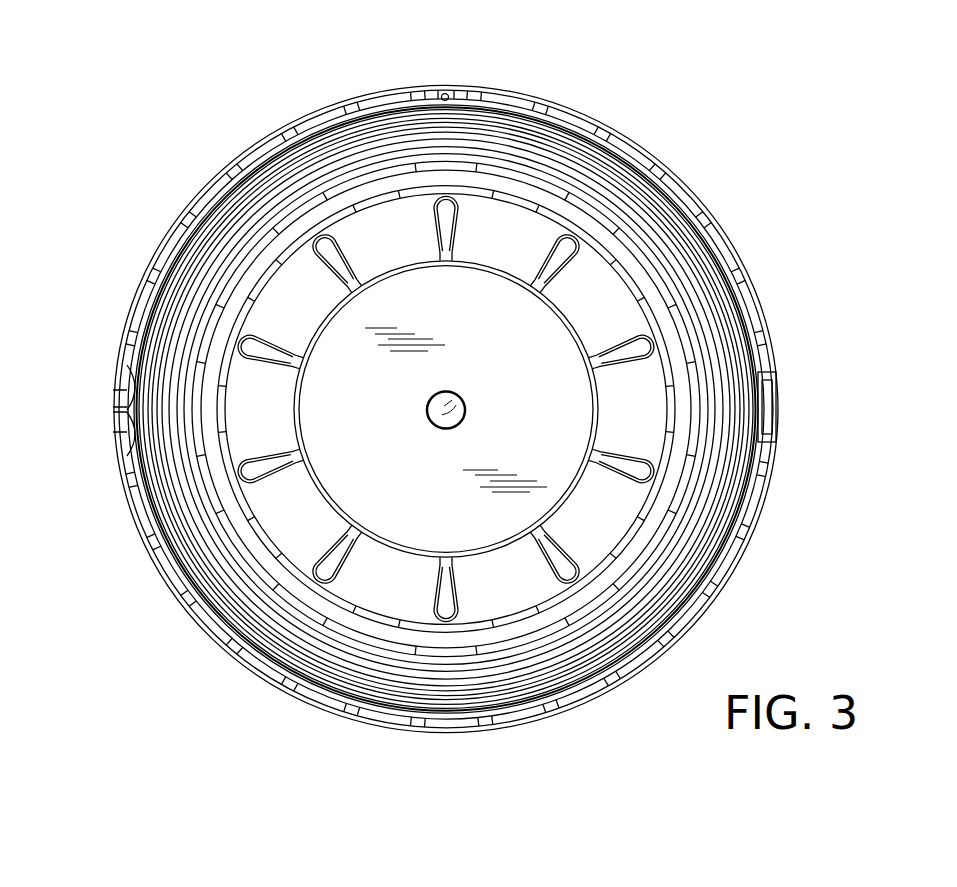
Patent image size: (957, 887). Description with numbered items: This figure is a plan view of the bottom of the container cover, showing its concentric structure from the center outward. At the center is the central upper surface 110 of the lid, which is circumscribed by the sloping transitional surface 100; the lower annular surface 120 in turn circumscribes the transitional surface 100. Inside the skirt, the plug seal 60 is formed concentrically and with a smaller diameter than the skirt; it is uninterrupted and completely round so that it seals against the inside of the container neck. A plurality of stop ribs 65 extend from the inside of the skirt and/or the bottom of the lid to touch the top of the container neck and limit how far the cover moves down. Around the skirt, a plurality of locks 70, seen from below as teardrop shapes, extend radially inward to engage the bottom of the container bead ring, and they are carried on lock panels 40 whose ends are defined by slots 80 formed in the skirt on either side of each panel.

The lock panel 40 is at (663, 156).
The plug seal 60 is at (533, 120).
The stop rib 65 is at (444, 95).
The lock 70 is at (579, 126).
The slot 80 is at (606, 126).
The sloping transitional surface 100 is at (305, 538).
The central upper surface 110 is at (422, 525).
The lower annular surface 120 is at (240, 578).